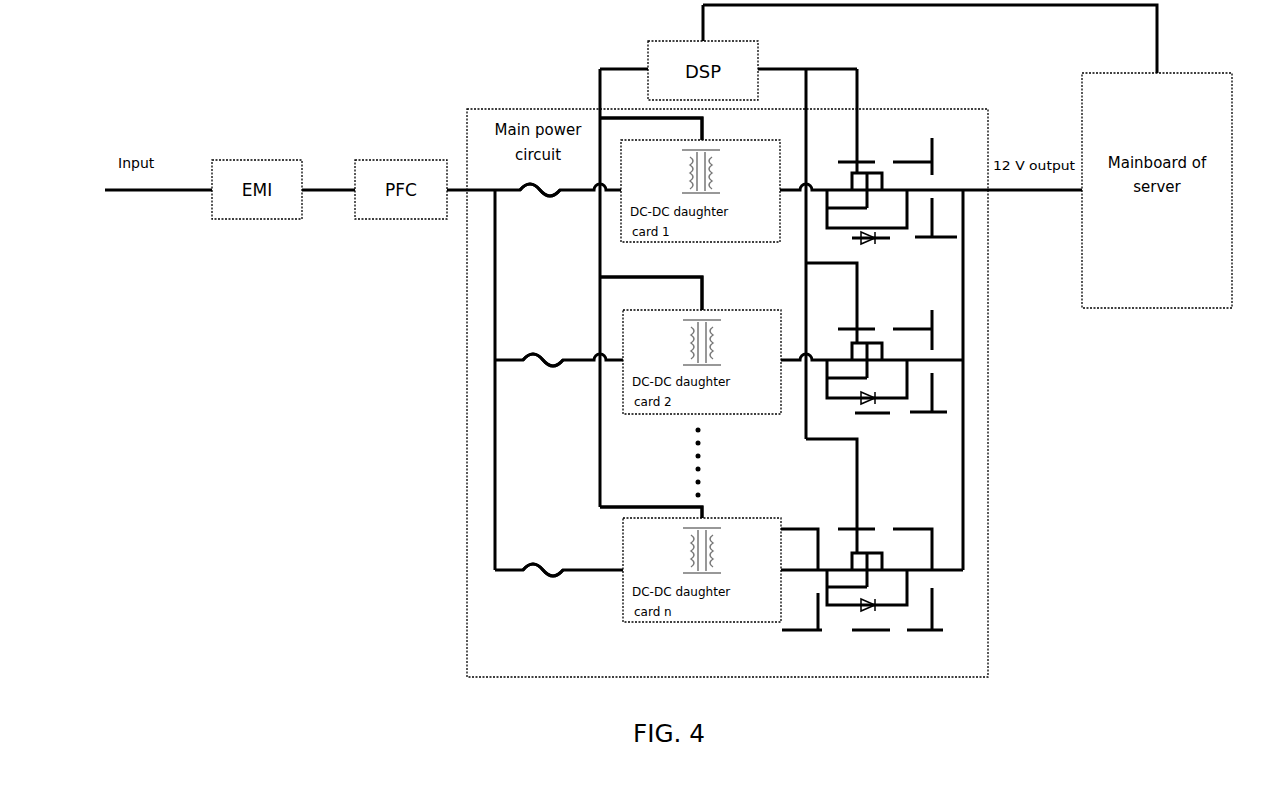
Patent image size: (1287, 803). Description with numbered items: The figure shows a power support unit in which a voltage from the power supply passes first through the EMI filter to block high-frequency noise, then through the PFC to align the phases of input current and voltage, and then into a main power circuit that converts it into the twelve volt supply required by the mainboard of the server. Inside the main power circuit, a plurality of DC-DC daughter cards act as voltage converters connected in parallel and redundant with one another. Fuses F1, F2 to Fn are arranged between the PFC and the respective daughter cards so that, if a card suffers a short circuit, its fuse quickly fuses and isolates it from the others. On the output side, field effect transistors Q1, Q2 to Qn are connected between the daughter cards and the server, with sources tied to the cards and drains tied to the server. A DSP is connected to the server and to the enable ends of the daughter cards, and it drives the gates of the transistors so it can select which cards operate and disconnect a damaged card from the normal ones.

The field effect transistor Q1 is at (892, 191).
The field effect transistor Q2 is at (887, 361).
The field effect transistor Qn is at (885, 579).
The fuse F1 is at (540, 204).
The fuse F2 is at (543, 374).
The fuse Fn is at (543, 584).
The EX control signal line EX is at (659, 317).